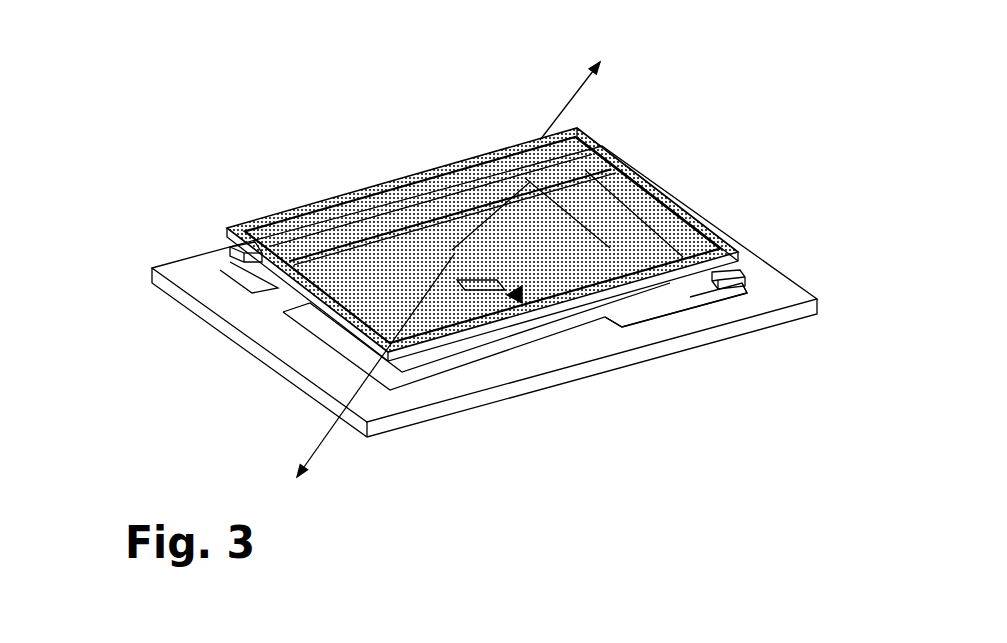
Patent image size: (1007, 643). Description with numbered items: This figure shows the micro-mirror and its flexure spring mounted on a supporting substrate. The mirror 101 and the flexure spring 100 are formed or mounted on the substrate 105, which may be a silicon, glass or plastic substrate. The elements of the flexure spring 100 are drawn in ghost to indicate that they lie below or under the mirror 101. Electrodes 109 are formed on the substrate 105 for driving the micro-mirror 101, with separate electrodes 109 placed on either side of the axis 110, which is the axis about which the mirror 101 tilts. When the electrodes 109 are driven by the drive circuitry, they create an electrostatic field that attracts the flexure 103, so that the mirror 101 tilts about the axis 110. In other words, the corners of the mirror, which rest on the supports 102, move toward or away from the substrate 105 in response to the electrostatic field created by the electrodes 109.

The flexure spring 100 is at (466, 292).
The mirror 101 is at (410, 178).
The supports 102 is at (225, 237).
The flexure 103 is at (700, 288).
The substrate 105 is at (208, 293).
The electrodes 109 is at (340, 338).
The axis 110 is at (612, 432).